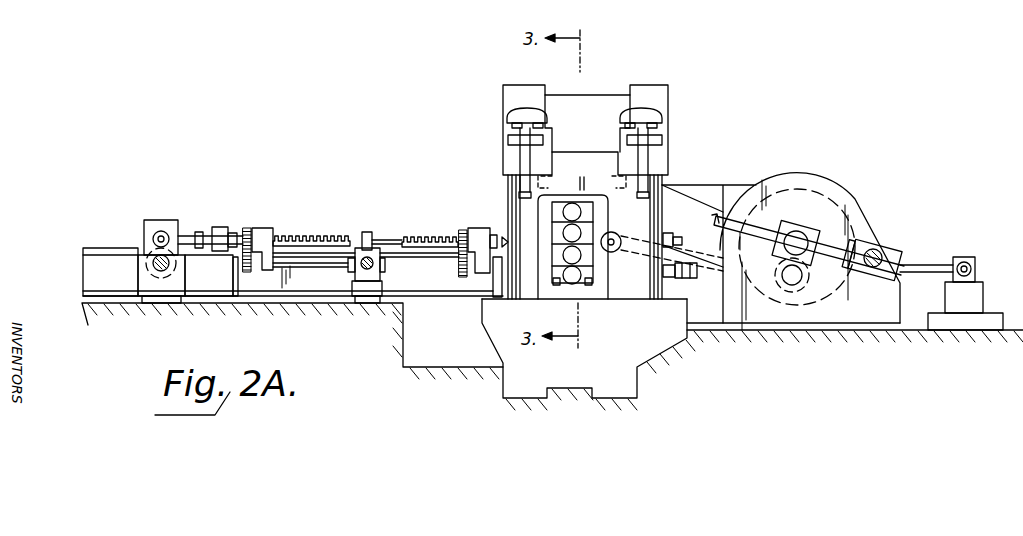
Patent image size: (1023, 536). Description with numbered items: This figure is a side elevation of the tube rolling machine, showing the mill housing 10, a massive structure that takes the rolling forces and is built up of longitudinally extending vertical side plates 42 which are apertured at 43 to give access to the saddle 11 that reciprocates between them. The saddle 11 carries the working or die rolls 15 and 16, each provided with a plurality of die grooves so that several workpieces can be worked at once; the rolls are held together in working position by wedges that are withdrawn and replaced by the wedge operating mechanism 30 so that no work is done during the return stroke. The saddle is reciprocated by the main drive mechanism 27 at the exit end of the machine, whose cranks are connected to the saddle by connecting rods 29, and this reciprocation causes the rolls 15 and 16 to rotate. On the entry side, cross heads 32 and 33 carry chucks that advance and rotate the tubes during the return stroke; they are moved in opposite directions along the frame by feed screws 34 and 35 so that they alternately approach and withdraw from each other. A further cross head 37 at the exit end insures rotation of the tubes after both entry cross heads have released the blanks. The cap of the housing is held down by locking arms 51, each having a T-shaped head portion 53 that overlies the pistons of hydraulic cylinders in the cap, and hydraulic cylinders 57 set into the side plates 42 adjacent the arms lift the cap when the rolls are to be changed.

The mill housing 10 is at (490, 148).
The saddle 11 is at (571, 264).
The working or die roll 15 is at (566, 236).
The working or die roll 16 is at (577, 256).
The main drive mechanism 27 is at (868, 196).
The connecting rod 29 is at (692, 257).
The wedge operating mechanism 30 is at (706, 192).
The cross head 32 is at (480, 272).
The cross head 33 is at (262, 228).
The feed screw 34 is at (413, 237).
The feed screw 35 is at (296, 236).
The cross head 37 is at (668, 278).
The side plate 42 is at (585, 237).
The aperture 43 is at (540, 212).
The locking arm 51 is at (523, 155).
The T-shaped head portion 53 is at (520, 112).
The hydraulic cylinder 57 is at (613, 178).